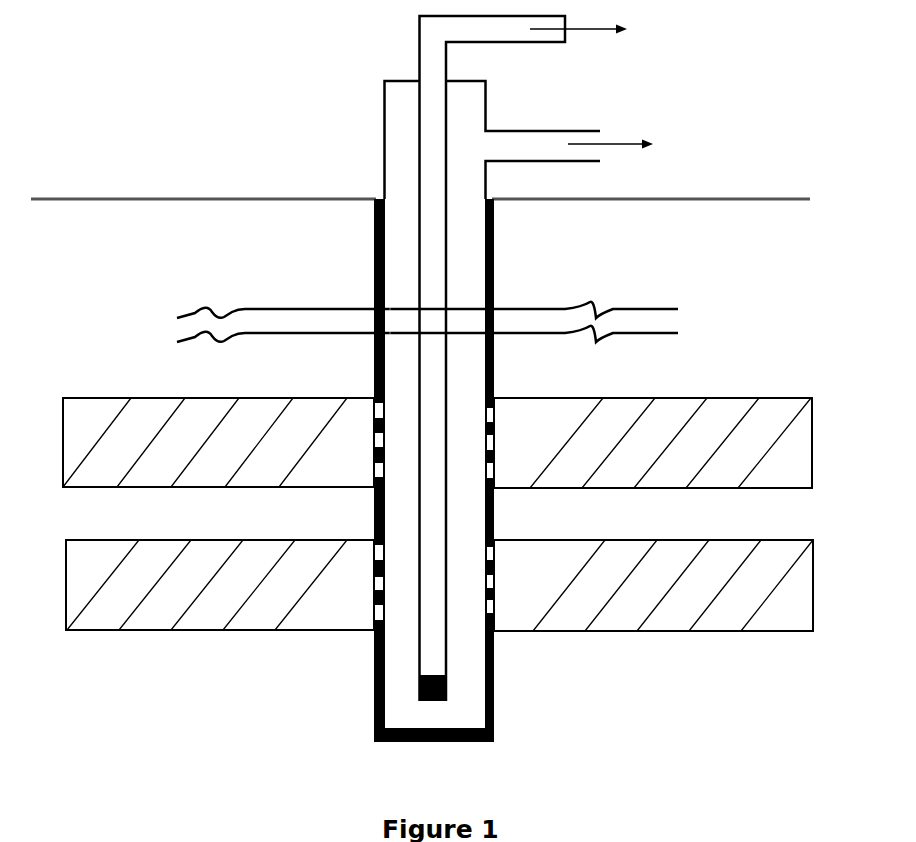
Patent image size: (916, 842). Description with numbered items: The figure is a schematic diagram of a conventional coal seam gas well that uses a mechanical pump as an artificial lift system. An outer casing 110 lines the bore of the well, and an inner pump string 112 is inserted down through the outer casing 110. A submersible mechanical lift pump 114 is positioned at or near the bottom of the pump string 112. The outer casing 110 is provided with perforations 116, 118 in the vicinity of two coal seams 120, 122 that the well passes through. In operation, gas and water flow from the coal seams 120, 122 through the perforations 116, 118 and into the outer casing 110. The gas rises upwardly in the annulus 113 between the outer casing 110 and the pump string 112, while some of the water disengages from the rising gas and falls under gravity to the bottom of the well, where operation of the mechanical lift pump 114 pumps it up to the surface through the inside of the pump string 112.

The outer casing 110 is at (503, 233).
The inner pump string 112 is at (411, 242).
The annulus 113 is at (396, 513).
The submersible mechanical lift pump 114 is at (497, 687).
The perforations 116 is at (503, 414).
The perforations 118 is at (502, 562).
The coal seam 120 is at (822, 438).
The coal seam 122 is at (822, 572).